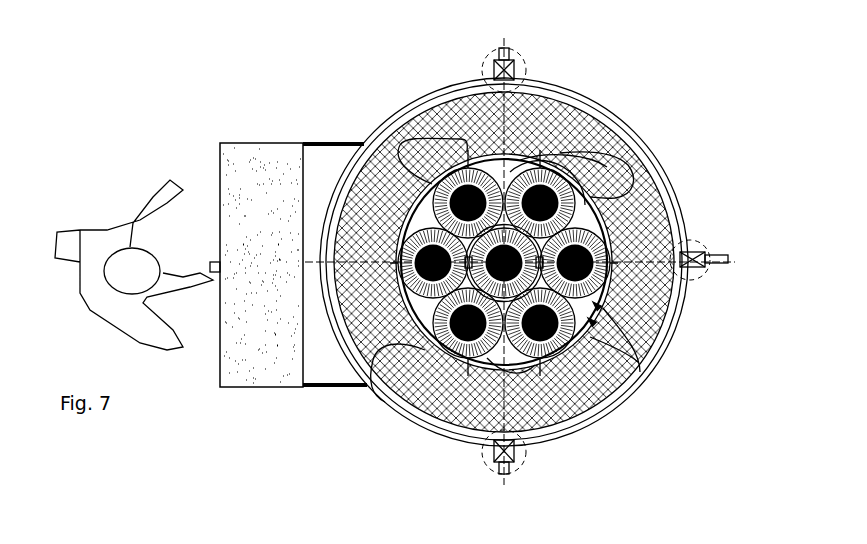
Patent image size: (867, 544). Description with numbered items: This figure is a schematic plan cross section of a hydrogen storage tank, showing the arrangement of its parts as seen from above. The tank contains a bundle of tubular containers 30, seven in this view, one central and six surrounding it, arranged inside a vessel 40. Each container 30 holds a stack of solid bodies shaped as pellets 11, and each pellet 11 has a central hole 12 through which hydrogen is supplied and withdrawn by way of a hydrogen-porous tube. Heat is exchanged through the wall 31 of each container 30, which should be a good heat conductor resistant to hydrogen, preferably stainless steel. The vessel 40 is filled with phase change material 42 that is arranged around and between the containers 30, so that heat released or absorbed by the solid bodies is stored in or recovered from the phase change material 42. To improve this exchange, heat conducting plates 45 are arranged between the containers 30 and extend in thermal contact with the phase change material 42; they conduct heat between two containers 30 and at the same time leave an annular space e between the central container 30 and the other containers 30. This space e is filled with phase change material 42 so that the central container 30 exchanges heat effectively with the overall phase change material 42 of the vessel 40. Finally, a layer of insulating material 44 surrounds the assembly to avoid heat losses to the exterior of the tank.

The pellet 11 is at (410, 137).
The central hole 12 is at (632, 160).
The tubular container 30 is at (597, 225).
The wall 31 is at (565, 130).
The vessel 40 is at (406, 153).
The phase change material 42 is at (600, 305).
The layer of insulating material 44 is at (483, 120).
The heat conducting plate 45 is at (496, 446).
The annular space e is at (540, 357).